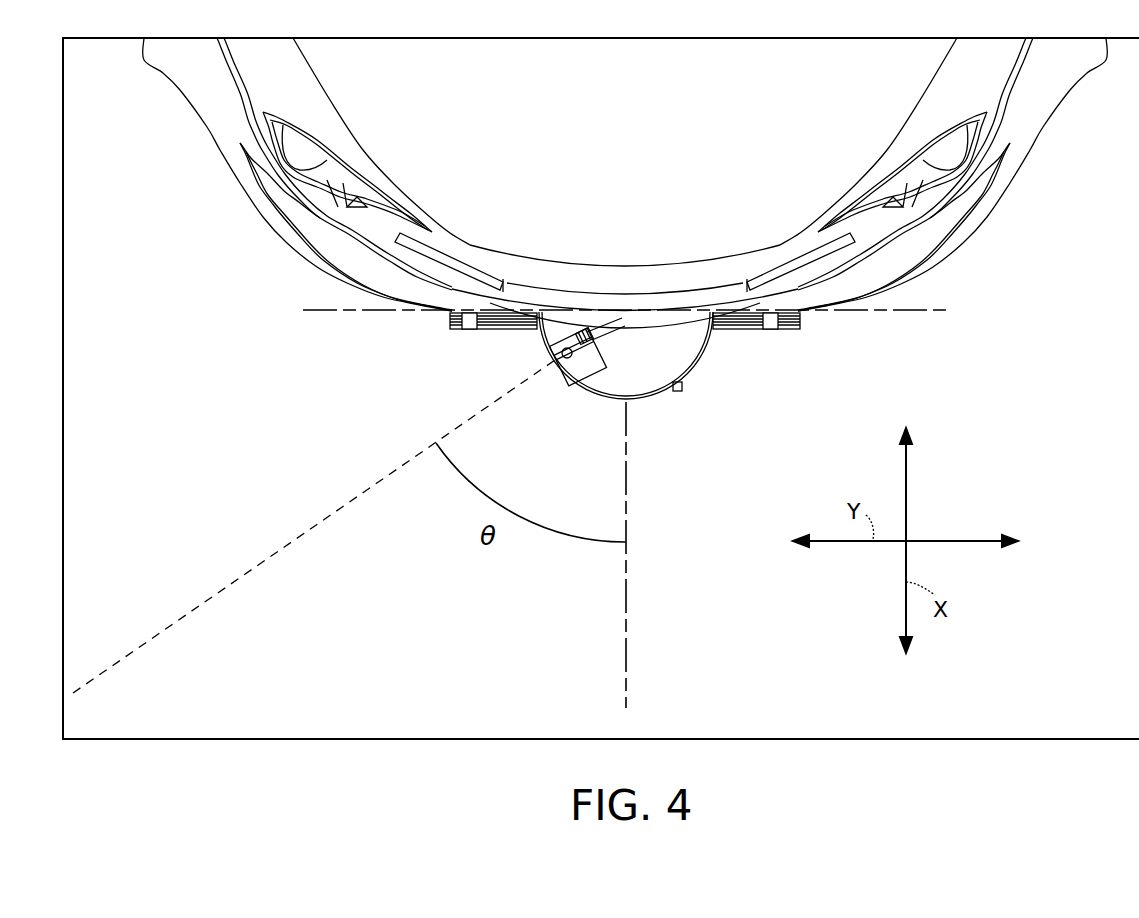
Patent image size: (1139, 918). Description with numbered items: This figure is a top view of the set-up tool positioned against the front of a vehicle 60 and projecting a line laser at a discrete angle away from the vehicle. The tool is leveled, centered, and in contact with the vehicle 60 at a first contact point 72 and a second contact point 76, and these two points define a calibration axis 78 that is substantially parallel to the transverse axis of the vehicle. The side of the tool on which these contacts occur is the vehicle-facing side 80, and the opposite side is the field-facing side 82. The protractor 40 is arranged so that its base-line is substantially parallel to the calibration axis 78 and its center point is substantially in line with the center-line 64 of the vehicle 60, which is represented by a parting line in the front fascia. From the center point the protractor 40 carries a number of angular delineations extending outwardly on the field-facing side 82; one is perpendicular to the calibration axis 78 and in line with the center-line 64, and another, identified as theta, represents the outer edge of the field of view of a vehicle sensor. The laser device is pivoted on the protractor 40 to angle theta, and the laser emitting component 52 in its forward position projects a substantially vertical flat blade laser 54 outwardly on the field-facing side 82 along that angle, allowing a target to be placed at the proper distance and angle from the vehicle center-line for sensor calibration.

The protractor structure 40 is at (652, 365).
The laser emitting component 52 is at (548, 362).
The laser 54 is at (233, 583).
The vehicle 60 is at (476, 100).
The center-line 64 is at (627, 510).
The first contact point 72 is at (463, 297).
The second contact point 76 is at (785, 297).
The calibration axis 78 is at (903, 312).
The vehicle-facing side 80 is at (272, 281).
The field-facing side 82 is at (262, 415).